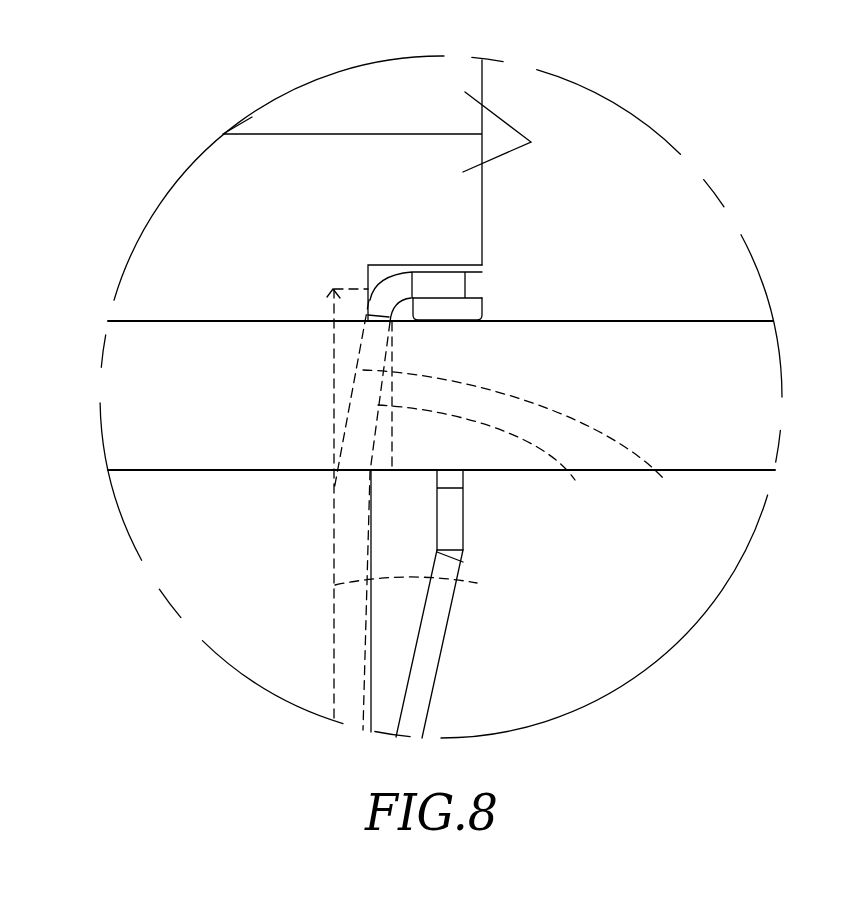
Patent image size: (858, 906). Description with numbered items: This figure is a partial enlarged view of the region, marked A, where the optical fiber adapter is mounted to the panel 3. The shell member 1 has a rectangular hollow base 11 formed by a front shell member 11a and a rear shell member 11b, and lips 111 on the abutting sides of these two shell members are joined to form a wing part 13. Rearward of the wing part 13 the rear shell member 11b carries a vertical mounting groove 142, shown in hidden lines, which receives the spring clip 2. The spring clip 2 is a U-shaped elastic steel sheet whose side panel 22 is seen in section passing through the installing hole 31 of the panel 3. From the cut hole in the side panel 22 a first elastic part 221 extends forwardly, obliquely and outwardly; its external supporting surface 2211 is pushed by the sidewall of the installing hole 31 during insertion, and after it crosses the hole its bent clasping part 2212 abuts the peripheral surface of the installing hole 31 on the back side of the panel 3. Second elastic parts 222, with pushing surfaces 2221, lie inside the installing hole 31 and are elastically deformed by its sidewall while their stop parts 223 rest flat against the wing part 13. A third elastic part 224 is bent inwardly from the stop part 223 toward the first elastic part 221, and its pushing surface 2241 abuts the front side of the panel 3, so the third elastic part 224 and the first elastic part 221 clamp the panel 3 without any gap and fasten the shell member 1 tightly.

The shell member 1 is at (133, 75).
The base 11 is at (220, 108).
The front shell member 11a is at (283, 112).
The rear shell member 11b is at (148, 543).
The lip 111 is at (525, 132).
The wing part 13 is at (588, 157).
The mounting groove 142 is at (333, 289).
The spring clip 2 is at (568, 243).
The side panel 22 is at (427, 514).
The first elastic part 221 is at (420, 673).
The supporting surface 2211 is at (448, 628).
The clasping part 2212 is at (453, 523).
The second elastic part 222 is at (535, 439).
The pushing surface 2221 is at (503, 456).
The stop part 223 is at (440, 280).
The third elastic part 224 is at (585, 298).
The pushing surface 2241 is at (472, 310).
The panel 3 is at (762, 347).
The installing hole 31 is at (392, 438).
The enlarged region A is at (757, 530).